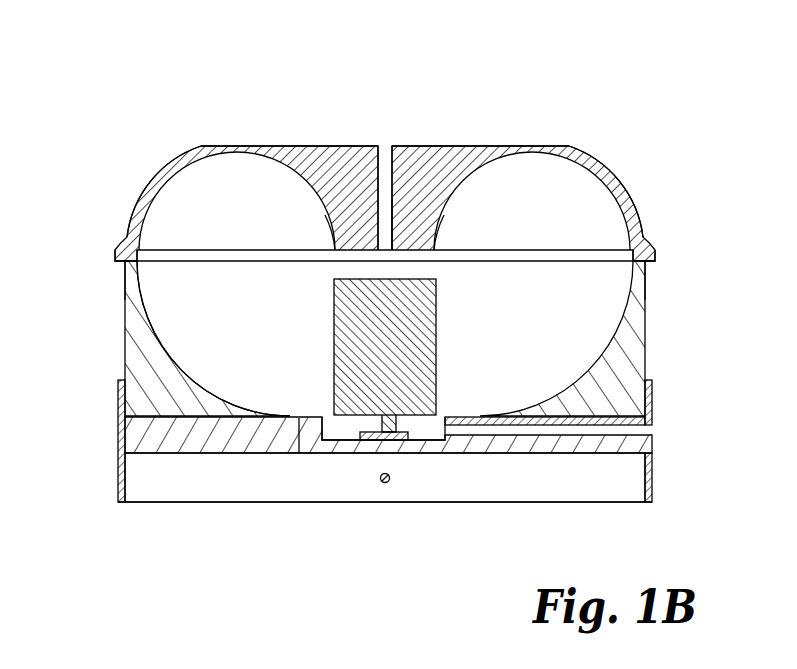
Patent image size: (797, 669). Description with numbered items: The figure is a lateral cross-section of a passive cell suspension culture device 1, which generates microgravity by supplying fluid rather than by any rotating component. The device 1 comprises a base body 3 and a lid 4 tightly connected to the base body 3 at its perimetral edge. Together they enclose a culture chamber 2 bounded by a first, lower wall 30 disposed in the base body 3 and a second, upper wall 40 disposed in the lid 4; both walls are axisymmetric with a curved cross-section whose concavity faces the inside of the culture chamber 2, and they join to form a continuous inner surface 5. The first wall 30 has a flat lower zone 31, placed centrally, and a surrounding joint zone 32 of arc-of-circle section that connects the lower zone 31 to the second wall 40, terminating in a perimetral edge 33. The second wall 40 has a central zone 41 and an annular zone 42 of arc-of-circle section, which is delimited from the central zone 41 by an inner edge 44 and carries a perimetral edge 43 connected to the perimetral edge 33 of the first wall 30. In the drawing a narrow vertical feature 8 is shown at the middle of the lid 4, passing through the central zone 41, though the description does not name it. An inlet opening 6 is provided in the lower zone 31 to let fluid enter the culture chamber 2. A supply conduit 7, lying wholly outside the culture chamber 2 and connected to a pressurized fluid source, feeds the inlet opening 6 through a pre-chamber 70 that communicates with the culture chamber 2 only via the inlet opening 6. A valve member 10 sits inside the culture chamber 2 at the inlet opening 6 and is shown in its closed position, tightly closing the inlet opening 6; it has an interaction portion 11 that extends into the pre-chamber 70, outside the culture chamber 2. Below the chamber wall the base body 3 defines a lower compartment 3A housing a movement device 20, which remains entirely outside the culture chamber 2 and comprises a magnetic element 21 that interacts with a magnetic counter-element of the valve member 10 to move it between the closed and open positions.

The cell suspension culture device 1 is at (703, 155).
The culture chamber 2 is at (525, 314).
The base body 3 is at (110, 408).
The lower compartment 3A is at (190, 478).
The lid 4 is at (326, 138).
The continuous inner surface 5 is at (183, 368).
The inlet opening 6 is at (347, 424).
The supply conduit 7 is at (596, 433).
The slot opening 8 is at (387, 155).
The valve member 10 is at (355, 305).
The interaction portion 11 is at (402, 421).
The movement device 20 is at (393, 492).
The magnetic element 21 is at (381, 484).
The first wall 30 is at (618, 360).
The lower zone 31 is at (299, 440).
The joint zone 32 is at (160, 340).
The perimetral edge 33 is at (137, 277).
The second wall 40 is at (467, 170).
The central zone 41 is at (417, 247).
The annular zone 42 is at (236, 150).
The perimetral edge 43 is at (137, 233).
The inner edge 44 is at (335, 249).
The pre-chamber 70 is at (424, 432).